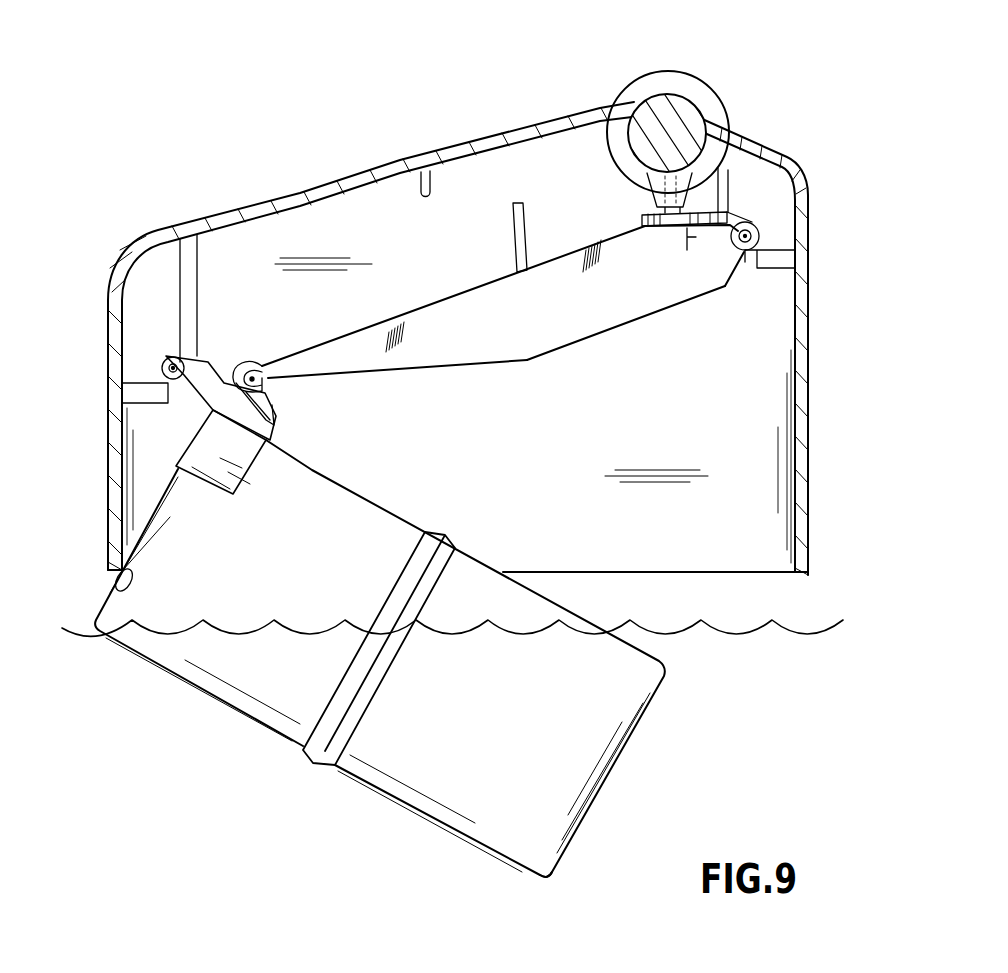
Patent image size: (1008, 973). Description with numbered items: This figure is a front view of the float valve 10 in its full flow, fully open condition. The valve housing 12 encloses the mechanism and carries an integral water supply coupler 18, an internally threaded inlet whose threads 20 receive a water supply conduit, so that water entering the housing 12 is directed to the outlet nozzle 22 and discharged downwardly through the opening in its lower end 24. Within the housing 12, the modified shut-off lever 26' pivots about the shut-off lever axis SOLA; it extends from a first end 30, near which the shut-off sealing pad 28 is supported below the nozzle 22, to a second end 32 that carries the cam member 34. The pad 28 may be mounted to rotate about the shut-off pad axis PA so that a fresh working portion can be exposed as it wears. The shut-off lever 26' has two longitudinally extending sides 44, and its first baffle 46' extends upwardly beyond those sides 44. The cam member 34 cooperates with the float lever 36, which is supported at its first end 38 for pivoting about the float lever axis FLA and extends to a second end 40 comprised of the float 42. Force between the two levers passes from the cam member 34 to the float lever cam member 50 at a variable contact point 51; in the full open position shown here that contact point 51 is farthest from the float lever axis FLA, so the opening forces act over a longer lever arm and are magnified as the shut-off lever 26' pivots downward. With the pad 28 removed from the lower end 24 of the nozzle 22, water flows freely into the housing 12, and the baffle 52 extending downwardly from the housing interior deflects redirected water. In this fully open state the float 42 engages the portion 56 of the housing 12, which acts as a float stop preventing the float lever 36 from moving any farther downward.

The float valve 10 is at (488, 323).
The valve housing 12 is at (808, 302).
The water supply coupler 18 is at (648, 73).
The internal threads 20 is at (722, 574).
The outlet nozzle 22 is at (648, 183).
The lower end of the water outlet 24 is at (666, 226).
The modified shut-off lever 26' is at (626, 340).
The shut-off sealing pad 28 is at (727, 214).
The first end of the shut-off lever 30 is at (760, 230).
The second end of the shut-off lever 32 is at (236, 370).
The cam member 34 is at (278, 421).
The float lever 36 is at (537, 877).
The first end of the float lever 38 is at (165, 366).
The second end of the float lever 40 is at (362, 696).
The float 42 is at (200, 697).
The longitudinally extending sides 44 is at (501, 325).
The first baffle 46' is at (492, 237).
The float lever cam member 50 is at (263, 364).
The variable contact point 51 is at (272, 398).
The baffle 52 is at (428, 165).
The float stop portion of the housing 56 is at (118, 580).
The float lever axis FLA is at (168, 382).
The shut-off pad axis PA is at (696, 237).
The shut-off lever axis SOLA is at (748, 256).